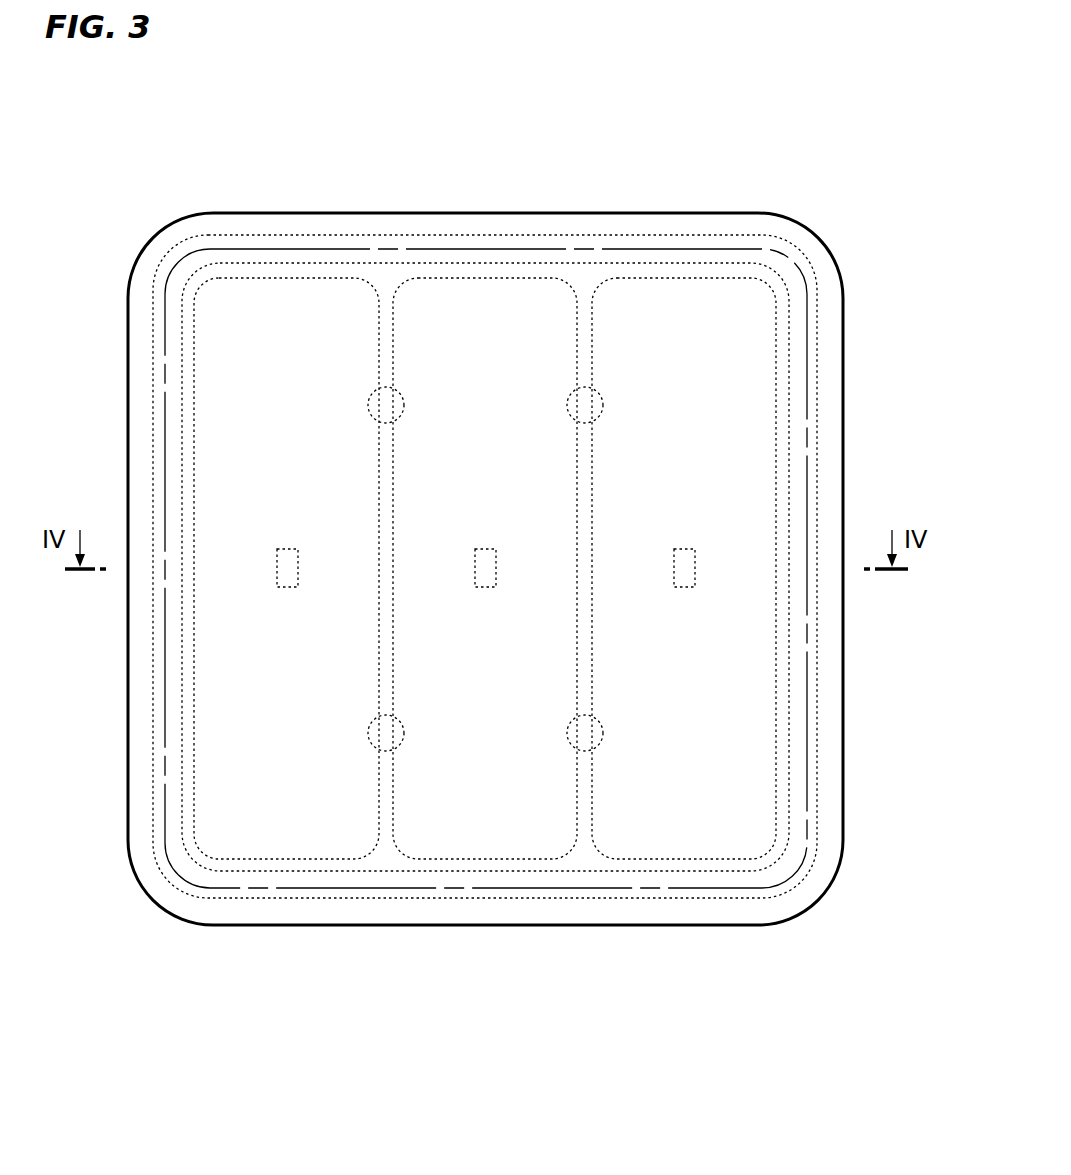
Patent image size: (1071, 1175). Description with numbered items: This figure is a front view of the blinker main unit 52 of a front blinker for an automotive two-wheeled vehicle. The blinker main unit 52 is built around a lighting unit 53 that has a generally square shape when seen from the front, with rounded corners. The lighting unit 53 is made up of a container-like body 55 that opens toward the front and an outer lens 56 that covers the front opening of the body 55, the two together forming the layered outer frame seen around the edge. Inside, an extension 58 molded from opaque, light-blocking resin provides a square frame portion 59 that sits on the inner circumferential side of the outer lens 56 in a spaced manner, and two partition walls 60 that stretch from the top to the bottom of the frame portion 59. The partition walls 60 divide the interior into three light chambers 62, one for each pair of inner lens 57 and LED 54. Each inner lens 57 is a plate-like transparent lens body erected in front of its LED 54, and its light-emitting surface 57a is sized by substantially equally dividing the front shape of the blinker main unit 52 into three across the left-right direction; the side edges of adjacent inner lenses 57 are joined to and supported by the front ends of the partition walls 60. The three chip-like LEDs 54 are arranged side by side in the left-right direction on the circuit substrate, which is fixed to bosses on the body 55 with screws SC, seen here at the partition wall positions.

The blinker main unit 52 is at (491, 567).
The lighting unit 53 is at (485, 659).
The LED 54 is at (287, 587).
The body 55 is at (414, 910).
The outer lens 56 is at (562, 934).
The inner lens 57 is at (494, 499).
The light-emitting surface 57a is at (258, 297).
The extension 58 is at (180, 268).
The frame portion 59 is at (182, 417).
The partition wall 60 is at (392, 503).
The light chamber 62 is at (488, 437).
The screw SC is at (369, 400).